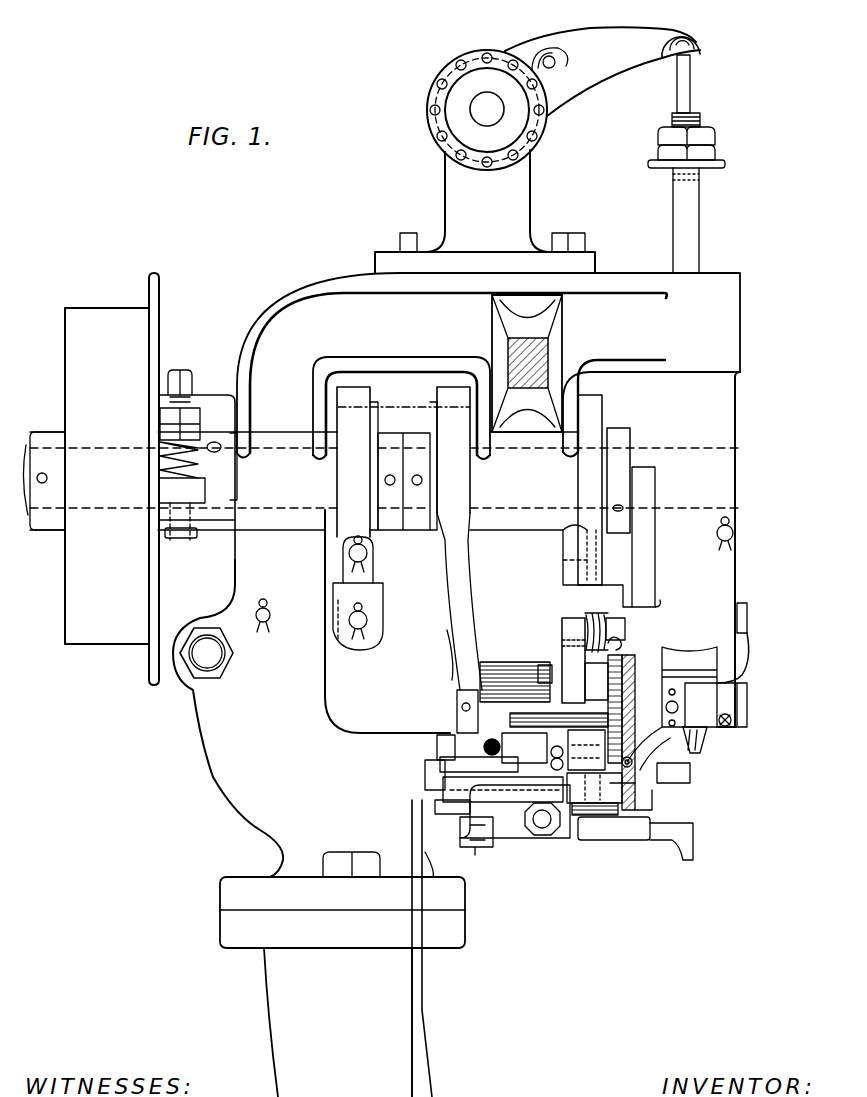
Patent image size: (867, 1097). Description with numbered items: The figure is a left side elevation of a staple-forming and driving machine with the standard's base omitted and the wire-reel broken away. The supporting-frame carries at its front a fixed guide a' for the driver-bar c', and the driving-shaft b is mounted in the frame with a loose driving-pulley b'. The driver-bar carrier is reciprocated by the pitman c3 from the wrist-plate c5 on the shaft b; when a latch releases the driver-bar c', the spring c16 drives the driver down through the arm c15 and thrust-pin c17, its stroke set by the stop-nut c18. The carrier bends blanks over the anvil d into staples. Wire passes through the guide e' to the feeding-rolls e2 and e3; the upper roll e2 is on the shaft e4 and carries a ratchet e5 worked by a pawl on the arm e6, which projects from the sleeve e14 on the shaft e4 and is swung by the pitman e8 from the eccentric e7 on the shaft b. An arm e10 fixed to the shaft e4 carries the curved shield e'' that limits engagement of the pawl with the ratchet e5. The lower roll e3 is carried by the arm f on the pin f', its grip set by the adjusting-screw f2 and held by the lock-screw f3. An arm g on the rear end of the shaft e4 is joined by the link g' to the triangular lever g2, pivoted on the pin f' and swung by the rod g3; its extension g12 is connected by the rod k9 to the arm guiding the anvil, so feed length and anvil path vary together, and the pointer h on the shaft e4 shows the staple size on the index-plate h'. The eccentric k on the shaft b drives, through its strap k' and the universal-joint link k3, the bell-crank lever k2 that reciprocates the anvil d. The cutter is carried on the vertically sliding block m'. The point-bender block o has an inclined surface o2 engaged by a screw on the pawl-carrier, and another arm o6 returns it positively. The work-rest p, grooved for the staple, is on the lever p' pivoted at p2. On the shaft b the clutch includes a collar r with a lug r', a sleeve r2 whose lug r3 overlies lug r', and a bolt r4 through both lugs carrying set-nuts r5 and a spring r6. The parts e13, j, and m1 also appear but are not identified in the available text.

The fixed guide a' is at (470, 575).
The driving-shaft b is at (381, 465).
The driving-pulley b' is at (112, 474).
The driver-bar c' is at (668, 220).
The rod or pitman c3 is at (640, 525).
The wrist-plate c5 is at (625, 441).
The arm c15 is at (602, 71).
The spring c16 is at (536, 58).
The thrust-pin c17 is at (690, 88).
The stop-nut c18 is at (658, 152).
The anvil d is at (698, 770).
The guide e' is at (663, 768).
The curved plate or shield e'' is at (637, 634).
The upper feeding-roll e2 is at (628, 668).
The lower feed-roller e3 is at (628, 812).
The shaft e4 is at (457, 702).
The ratchet e5 is at (572, 648).
The arm e6 is at (578, 618).
The eccentric e7 is at (433, 406).
The pitman e8 is at (446, 565).
The arm e10 is at (585, 690).
The rod e13 is at (516, 683).
The sleeve e14 is at (559, 711).
The arm f is at (587, 845).
The pin f' is at (515, 811).
The adjusting-screw f2 is at (605, 805).
The lock-screw f3 is at (586, 746).
The arm g is at (479, 766).
The link g' is at (426, 733).
The triangular arm g2 is at (428, 772).
The rod g3 is at (424, 977).
The extension g12 is at (440, 808).
The pointer h is at (721, 680).
The segmental index-plate h' is at (755, 610).
The block j is at (692, 765).
The eccentric k is at (403, 462).
The strap k' is at (373, 554).
The bell-crank lever k2 is at (337, 640).
The universal-joint link k3 is at (370, 583).
The rod k9 is at (476, 848).
The block m' is at (587, 566).
The bar m1 is at (602, 412).
The block o is at (492, 786).
The inclined surface o2 is at (558, 746).
The arm o6 is at (516, 762).
The work-rest p is at (682, 852).
The lever p' is at (614, 849).
The pivot p2 is at (543, 830).
The collar r is at (198, 461).
The lug r' is at (197, 542).
The sleeve r2 is at (178, 540).
The lug r3 is at (205, 492).
The bolt r4 is at (183, 378).
The set-nuts r5 is at (166, 418).
The spring r6 is at (164, 470).